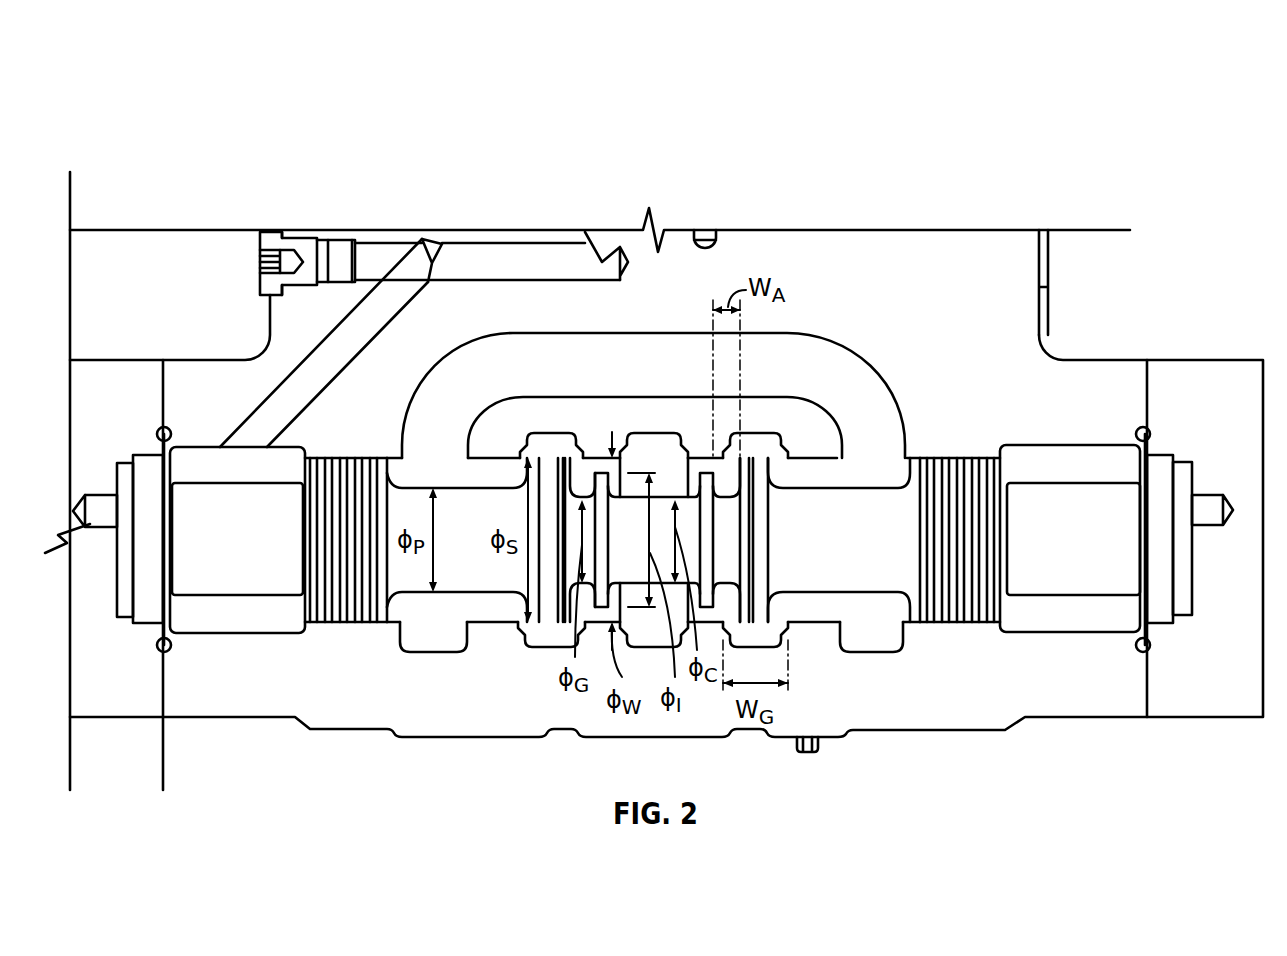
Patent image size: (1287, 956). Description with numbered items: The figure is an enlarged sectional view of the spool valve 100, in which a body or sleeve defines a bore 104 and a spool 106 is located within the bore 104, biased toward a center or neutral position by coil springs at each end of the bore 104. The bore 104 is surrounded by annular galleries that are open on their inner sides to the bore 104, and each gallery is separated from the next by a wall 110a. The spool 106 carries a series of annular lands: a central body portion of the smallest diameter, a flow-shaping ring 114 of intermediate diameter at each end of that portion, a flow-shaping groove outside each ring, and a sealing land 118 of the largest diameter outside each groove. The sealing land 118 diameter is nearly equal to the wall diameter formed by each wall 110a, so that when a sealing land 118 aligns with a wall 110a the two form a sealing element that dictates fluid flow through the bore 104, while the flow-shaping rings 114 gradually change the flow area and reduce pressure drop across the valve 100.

The spool valve 100 is at (160, 86).
The bore 104 is at (823, 473).
The spool 106 is at (1085, 549).
The wall 110a is at (590, 457).
The flow-shaping ring 114 is at (603, 457).
The sealing land 118 is at (547, 460).